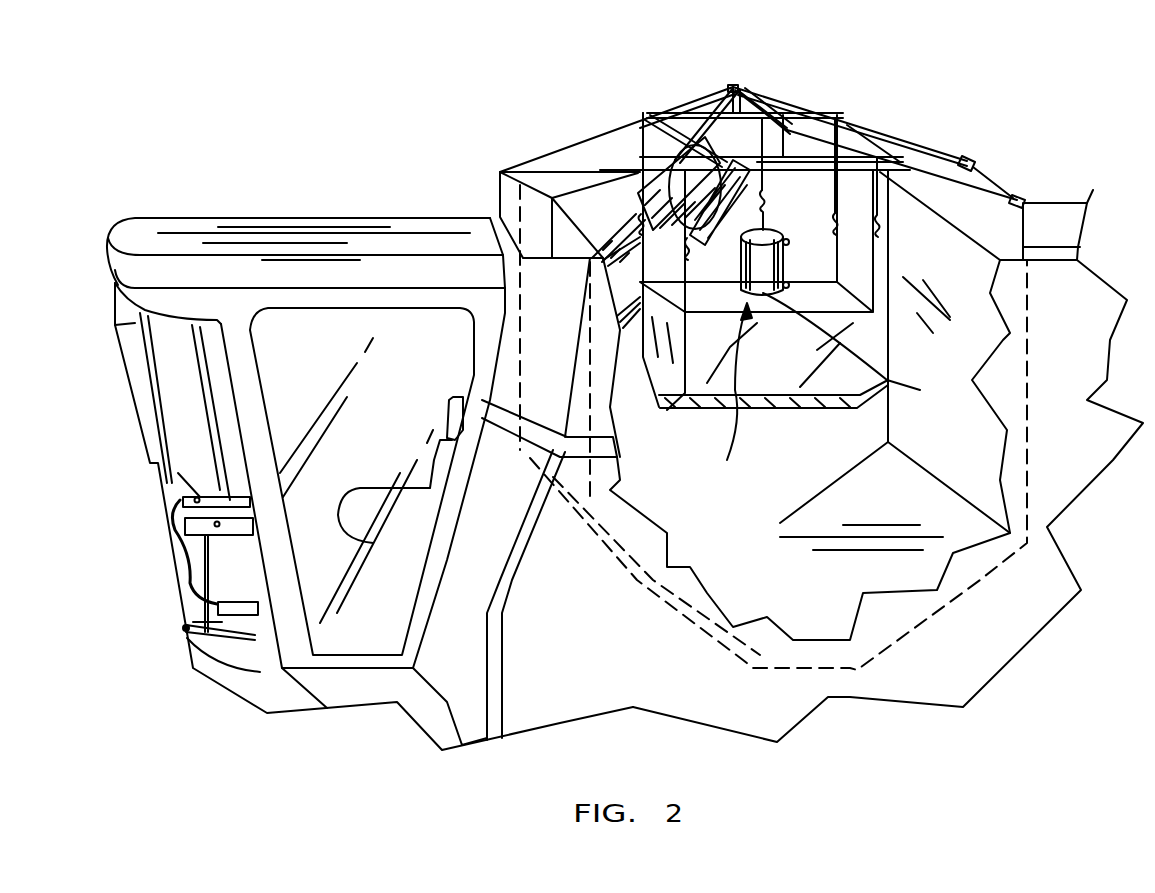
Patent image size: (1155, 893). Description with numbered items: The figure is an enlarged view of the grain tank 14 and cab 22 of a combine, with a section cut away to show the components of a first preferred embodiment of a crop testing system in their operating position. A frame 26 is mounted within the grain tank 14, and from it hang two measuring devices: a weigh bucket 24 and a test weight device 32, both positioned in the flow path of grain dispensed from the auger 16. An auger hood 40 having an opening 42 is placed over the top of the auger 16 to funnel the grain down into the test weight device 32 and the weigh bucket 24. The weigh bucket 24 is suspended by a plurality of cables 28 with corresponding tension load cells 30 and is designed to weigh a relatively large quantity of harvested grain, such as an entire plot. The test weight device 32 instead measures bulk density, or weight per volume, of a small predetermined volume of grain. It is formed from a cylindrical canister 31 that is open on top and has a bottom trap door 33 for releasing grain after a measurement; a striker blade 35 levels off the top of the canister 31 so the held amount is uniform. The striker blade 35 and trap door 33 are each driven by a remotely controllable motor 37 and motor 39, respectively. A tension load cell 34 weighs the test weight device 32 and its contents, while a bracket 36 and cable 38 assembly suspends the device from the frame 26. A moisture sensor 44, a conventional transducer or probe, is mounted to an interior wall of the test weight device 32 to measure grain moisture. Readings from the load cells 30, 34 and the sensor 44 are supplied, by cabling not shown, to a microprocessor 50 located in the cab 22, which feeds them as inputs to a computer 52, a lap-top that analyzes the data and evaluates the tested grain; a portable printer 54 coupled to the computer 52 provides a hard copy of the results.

The grain tank 14 is at (960, 247).
The auger 16 is at (637, 200).
The cab 22 is at (317, 323).
The weigh bucket 24 is at (800, 365).
The frame 26 is at (830, 113).
The cables 28 is at (690, 290).
The tension load cells 30 is at (645, 217).
The canister 31 is at (833, 285).
The test weight device 32 is at (731, 397).
The trap door 33 is at (859, 349).
The tension load cell 34 is at (763, 193).
The striker blade 35 is at (763, 233).
The bracket 36 is at (733, 85).
The motor 37 is at (789, 243).
The cable 38 is at (793, 162).
The motor 39 is at (853, 245).
The auger hood 40 is at (683, 170).
The opening 42 is at (720, 167).
The moisture sensor 44 is at (743, 280).
The microprocessor 50 is at (247, 615).
The computer 52 is at (183, 500).
The printer 54 is at (193, 527).